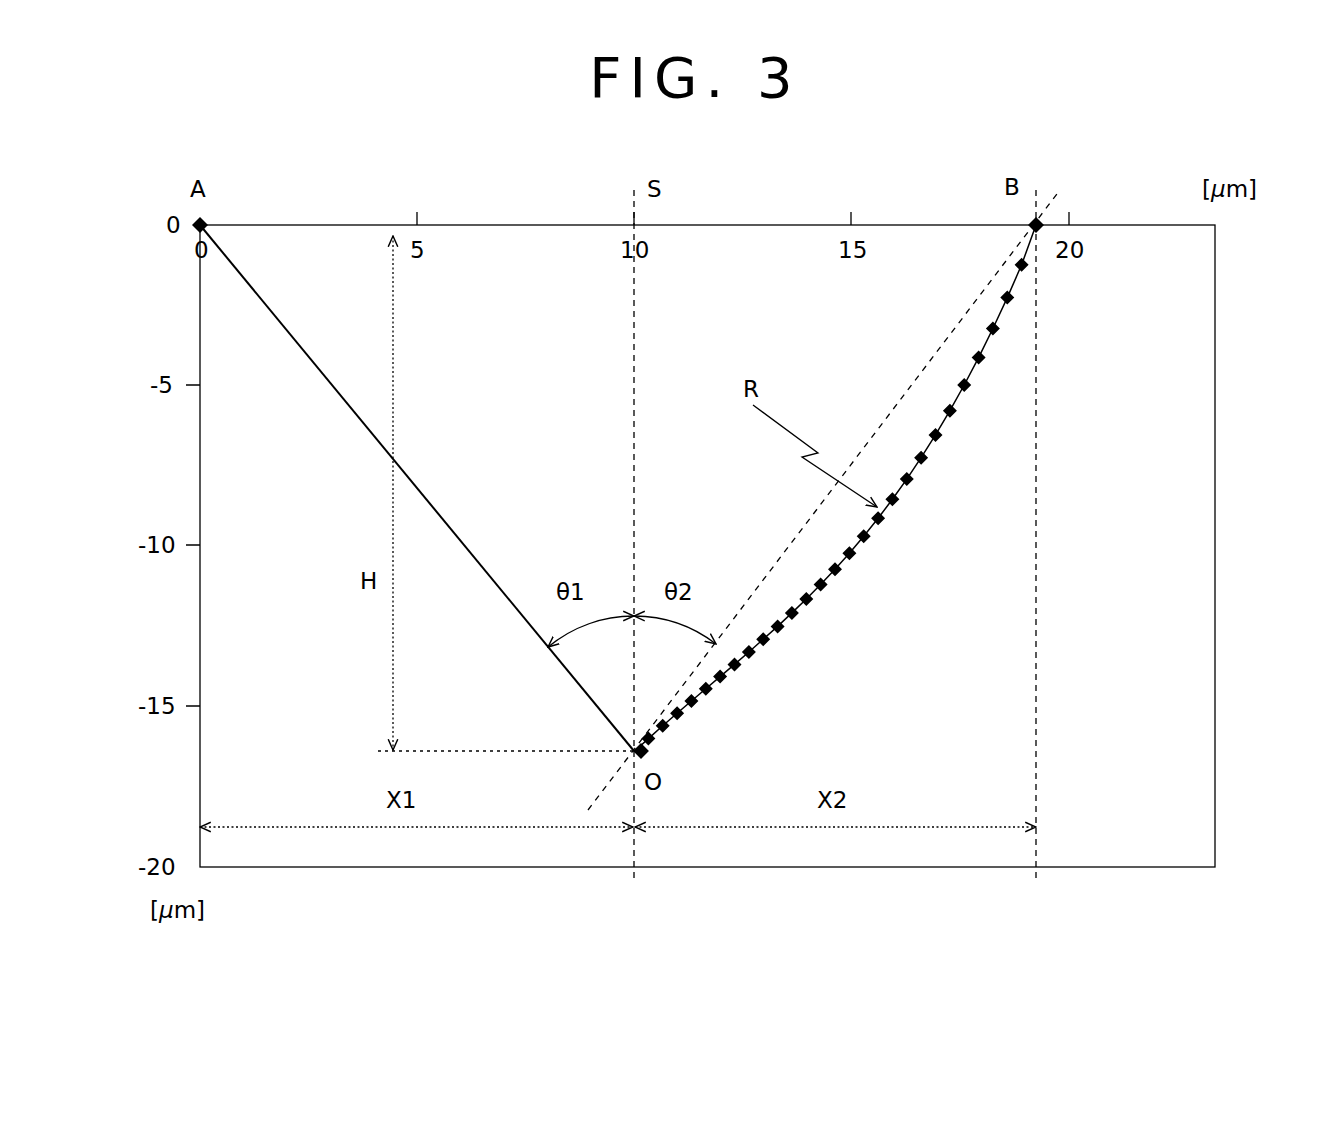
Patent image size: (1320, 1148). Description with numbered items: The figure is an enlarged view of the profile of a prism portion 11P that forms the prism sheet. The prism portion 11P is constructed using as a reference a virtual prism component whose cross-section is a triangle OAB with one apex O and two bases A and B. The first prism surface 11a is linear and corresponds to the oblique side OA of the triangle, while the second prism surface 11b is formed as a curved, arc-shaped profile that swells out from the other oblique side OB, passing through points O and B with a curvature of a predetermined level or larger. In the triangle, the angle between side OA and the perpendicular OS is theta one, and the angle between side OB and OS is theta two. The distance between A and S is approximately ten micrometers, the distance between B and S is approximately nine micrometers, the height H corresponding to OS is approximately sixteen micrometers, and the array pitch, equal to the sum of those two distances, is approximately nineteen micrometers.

The first prism surface 11a is at (322, 375).
The second prism surface 11b is at (957, 405).
The prism portion 11P is at (577, 683).